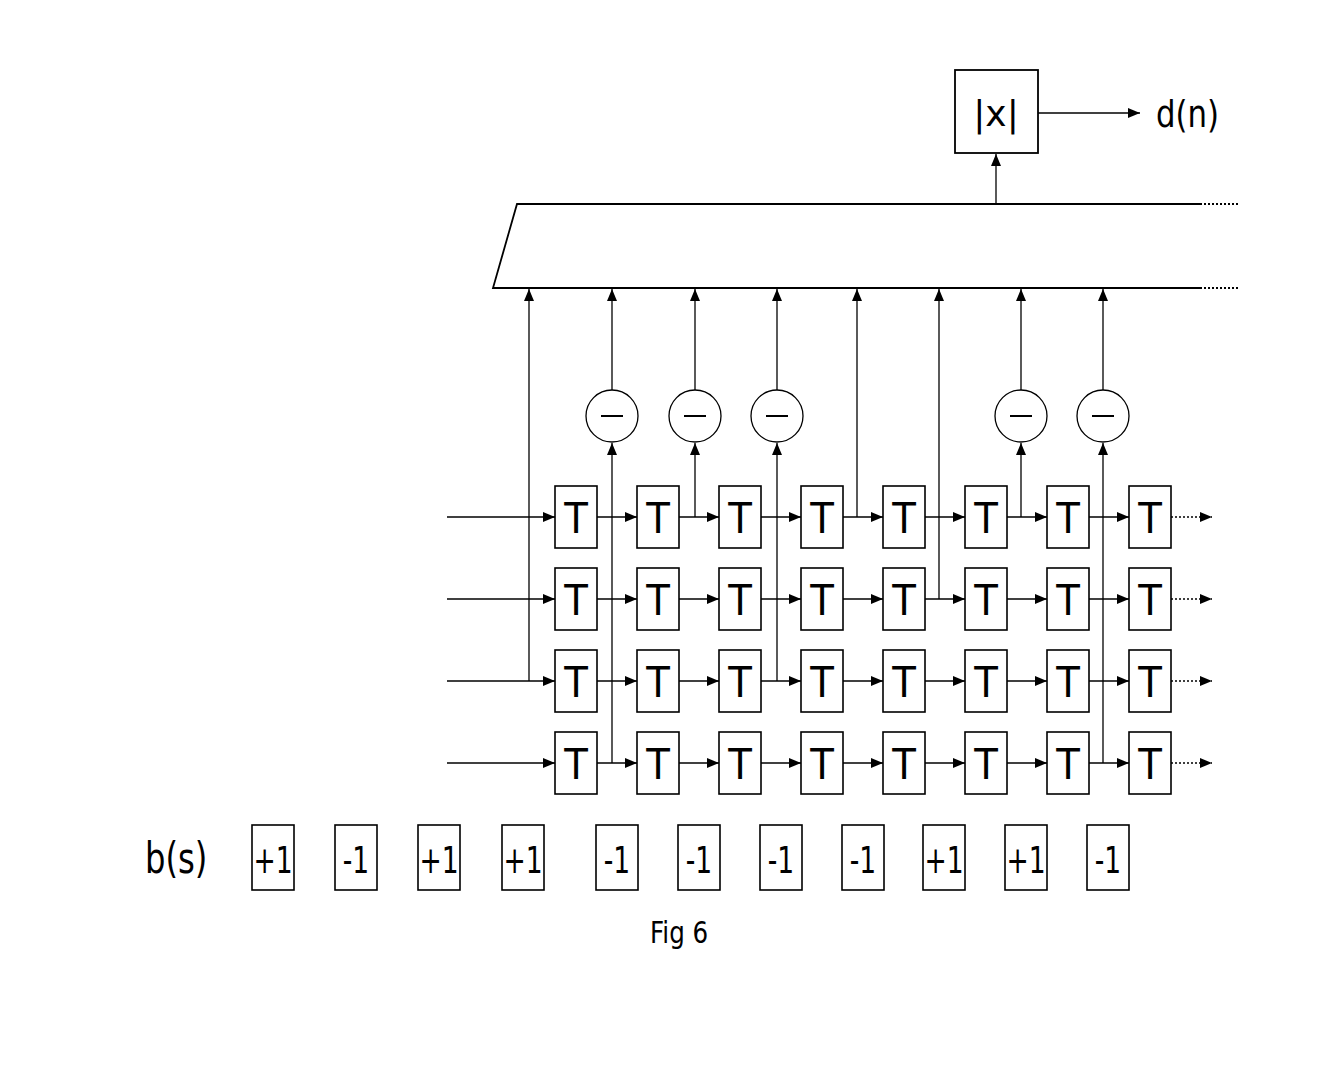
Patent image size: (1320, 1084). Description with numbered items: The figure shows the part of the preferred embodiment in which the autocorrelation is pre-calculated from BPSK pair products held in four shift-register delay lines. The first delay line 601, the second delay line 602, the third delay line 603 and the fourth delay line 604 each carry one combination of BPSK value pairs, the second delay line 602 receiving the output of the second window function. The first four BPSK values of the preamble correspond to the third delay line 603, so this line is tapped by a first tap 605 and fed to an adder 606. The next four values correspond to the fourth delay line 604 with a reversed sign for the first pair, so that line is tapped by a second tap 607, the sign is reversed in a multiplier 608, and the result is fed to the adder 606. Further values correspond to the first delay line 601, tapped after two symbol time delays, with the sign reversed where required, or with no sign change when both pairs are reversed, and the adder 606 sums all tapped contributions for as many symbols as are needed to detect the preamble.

The first delay line 601 is at (483, 517).
The second delay line 602 is at (483, 599).
The third delay line 603 is at (470, 681).
The fourth delay line 604 is at (487, 763).
The first tap 605 is at (527, 338).
The adder 606 is at (568, 203).
The second tap 607 is at (608, 473).
The multiplier 608 is at (637, 407).